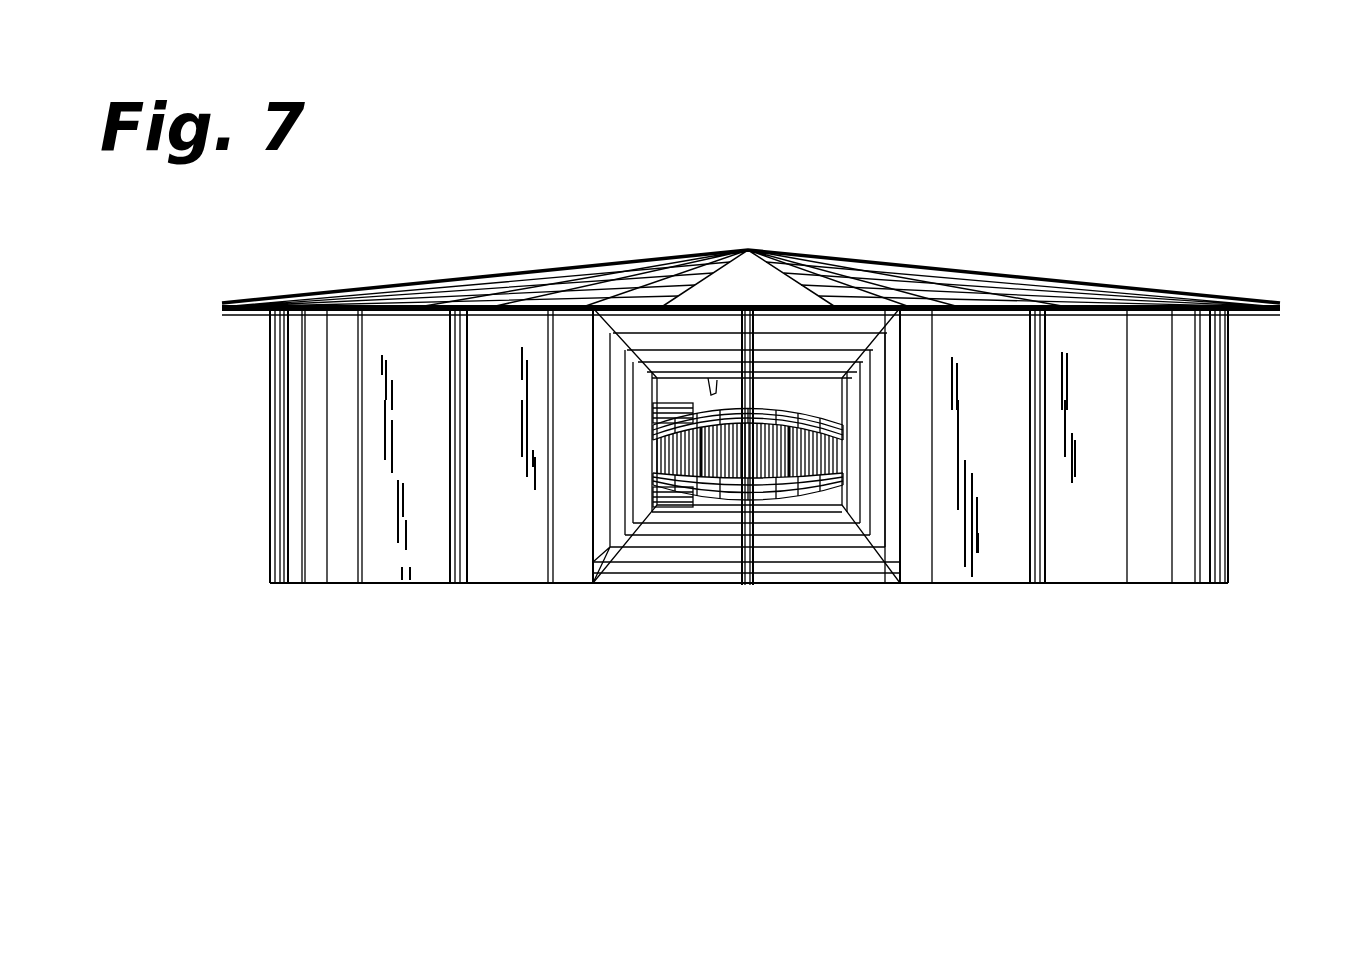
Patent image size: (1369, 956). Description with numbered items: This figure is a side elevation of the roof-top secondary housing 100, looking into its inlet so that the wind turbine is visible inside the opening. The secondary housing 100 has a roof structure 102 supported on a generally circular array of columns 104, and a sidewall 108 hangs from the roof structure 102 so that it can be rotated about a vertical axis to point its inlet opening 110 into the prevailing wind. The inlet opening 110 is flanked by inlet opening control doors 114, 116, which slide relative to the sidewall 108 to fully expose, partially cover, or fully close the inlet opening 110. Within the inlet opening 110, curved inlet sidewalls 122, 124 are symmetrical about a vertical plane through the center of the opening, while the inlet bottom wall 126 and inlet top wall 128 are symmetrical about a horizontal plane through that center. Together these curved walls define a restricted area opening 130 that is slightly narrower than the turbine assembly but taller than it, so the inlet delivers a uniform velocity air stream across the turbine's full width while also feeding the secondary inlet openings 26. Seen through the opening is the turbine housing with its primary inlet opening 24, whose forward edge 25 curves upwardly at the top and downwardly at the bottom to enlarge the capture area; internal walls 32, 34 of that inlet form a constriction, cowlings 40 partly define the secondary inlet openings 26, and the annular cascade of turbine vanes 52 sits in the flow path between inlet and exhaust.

The secondary housing 100 is at (888, 258).
The roof structure 102 is at (497, 297).
The columns 104 is at (270, 437).
The sidewall 108 is at (340, 565).
The inlet opening 110 is at (690, 552).
The inlet opening control door 114 is at (412, 545).
The inlet opening control door 116 is at (1072, 540).
The inlet sidewall 122 is at (617, 495).
The inlet sidewall 124 is at (885, 520).
The inlet bottom wall 126 is at (800, 555).
The inlet top wall 128 is at (803, 325).
The restricted area opening 130 is at (712, 385).
The primary inlet opening 24 is at (720, 497).
The forward edge 25 is at (803, 417).
The secondary inlet opening 26 is at (680, 410).
The internal wall 32 is at (848, 398).
The internal wall 34 is at (628, 550).
The cowling 40 is at (690, 405).
The turbine vanes 52 is at (779, 412).